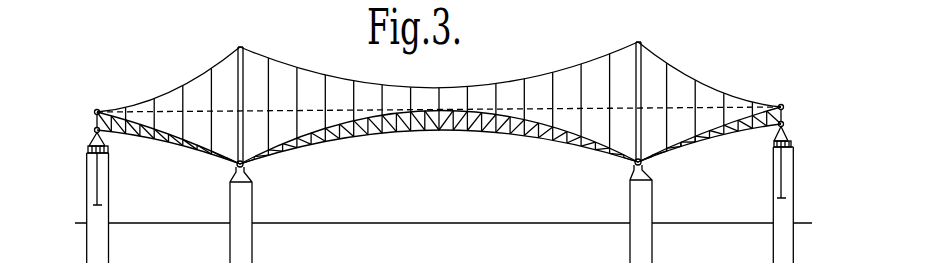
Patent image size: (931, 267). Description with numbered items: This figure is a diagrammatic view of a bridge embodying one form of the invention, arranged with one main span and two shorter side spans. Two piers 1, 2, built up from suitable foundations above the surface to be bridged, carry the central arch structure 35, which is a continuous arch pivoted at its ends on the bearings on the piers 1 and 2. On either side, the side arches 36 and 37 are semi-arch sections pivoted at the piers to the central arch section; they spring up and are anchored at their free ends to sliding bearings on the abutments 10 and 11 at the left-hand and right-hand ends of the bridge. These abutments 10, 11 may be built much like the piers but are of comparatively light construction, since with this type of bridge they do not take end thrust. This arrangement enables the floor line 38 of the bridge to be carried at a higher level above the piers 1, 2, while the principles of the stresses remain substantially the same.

The pier 1 is at (247, 207).
The pier 2 is at (642, 207).
The abutment 10 is at (87, 203).
The abutment 11 is at (792, 205).
The central arch structure 35 is at (420, 130).
The side arch 36 is at (146, 137).
The side arch 37 is at (732, 133).
The floor line 38 is at (681, 131).